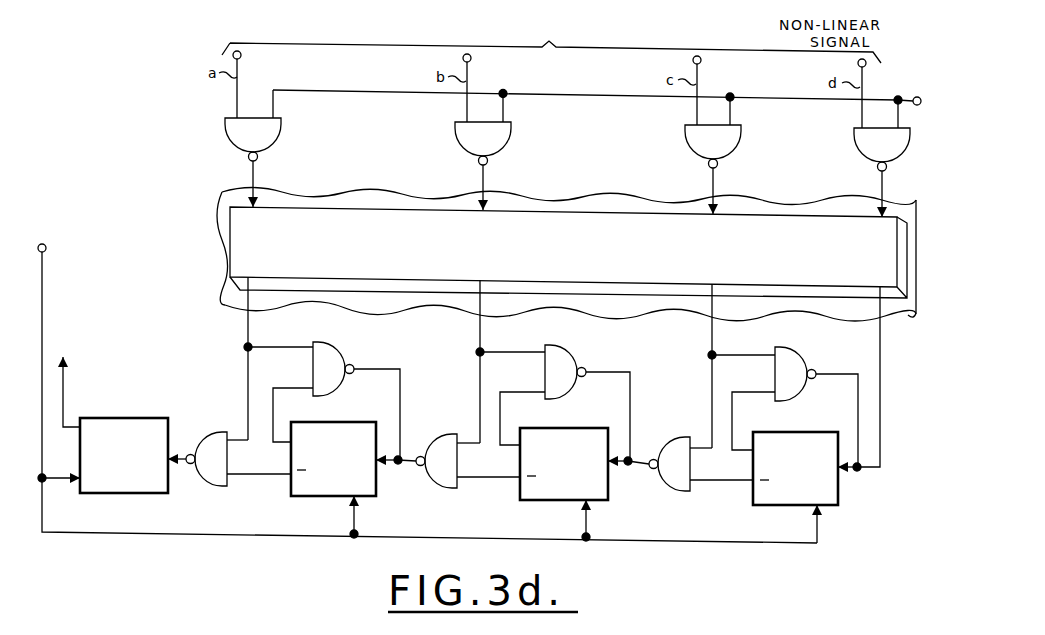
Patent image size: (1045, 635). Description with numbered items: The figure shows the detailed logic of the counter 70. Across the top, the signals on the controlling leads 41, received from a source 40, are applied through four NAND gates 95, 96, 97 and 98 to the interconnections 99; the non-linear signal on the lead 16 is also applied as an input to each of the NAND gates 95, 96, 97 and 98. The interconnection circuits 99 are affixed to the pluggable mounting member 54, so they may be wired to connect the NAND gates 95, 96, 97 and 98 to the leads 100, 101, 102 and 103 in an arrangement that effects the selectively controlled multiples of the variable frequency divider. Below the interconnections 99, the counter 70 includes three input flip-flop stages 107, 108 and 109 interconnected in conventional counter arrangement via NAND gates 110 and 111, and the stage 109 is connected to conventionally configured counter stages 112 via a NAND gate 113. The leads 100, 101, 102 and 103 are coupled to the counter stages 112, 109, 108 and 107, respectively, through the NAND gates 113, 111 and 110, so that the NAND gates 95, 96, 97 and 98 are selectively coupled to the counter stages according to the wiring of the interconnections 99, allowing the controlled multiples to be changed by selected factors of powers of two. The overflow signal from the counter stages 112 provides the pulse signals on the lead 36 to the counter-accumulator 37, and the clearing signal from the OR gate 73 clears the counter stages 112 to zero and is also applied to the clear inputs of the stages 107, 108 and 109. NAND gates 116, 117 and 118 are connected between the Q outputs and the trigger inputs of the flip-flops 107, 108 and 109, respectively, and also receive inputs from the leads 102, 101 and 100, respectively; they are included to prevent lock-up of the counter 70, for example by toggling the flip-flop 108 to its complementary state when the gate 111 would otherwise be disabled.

The counter 70 is at (142, 95).
The signal source 40 is at (592, 43).
The controlling leads 41 is at (360, 66).
The NAND gate 95 is at (226, 139).
The NAND gate 96 is at (456, 140).
The NAND gate 97 is at (685, 142).
The NAND gate 98 is at (852, 145).
The lead 16 is at (886, 38).
The pluggable mounting member 54 is at (222, 199).
The interconnections 99 is at (234, 253).
The lead 100 is at (248, 329).
The lead 101 is at (479, 326).
The lead 102 is at (710, 331).
The lead 103 is at (880, 333).
The NAND gate 118 is at (345, 396).
The NAND gate 117 is at (570, 390).
The NAND gate 116 is at (800, 392).
The NAND gate 113 is at (218, 431).
The NAND gate 111 is at (450, 434).
The NAND gate 110 is at (686, 438).
The flip-flop stage 109 is at (294, 497).
The flip-flop stage 108 is at (530, 502).
The flip-flop stage 107 is at (750, 500).
The counter stages 112 is at (126, 493).
The OR gate 73 is at (108, 291).
The lead 36 is at (68, 404).
The counter-accumulator 37 is at (158, 365).